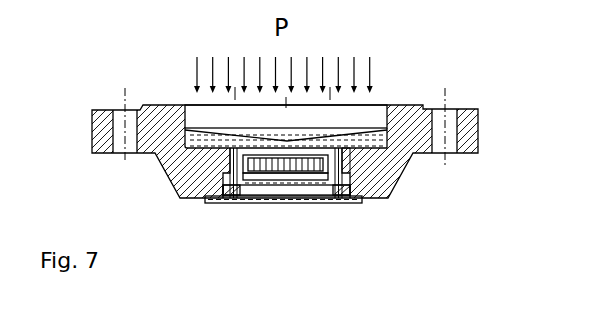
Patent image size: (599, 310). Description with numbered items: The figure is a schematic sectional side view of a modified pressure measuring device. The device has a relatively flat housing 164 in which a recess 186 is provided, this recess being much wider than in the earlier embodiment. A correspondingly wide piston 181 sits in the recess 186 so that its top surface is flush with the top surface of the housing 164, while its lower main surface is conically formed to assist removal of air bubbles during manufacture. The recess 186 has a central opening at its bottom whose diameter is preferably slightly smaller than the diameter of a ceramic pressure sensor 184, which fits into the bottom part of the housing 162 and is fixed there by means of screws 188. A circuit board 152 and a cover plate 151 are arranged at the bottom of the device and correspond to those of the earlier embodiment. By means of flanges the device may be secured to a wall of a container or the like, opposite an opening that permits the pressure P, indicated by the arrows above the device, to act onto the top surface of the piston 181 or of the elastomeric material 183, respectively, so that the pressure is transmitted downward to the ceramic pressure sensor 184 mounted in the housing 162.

The housing 162 is at (180, 170).
The housing 164 is at (102, 110).
The piston 181 is at (200, 115).
The elastomeric material 183 is at (380, 143).
The ceramic pressure sensor 184 is at (248, 188).
The circuit board 152 is at (264, 162).
The cover plate 151 is at (299, 198).
The screws 188 is at (335, 187).
The recess 186 is at (364, 155).